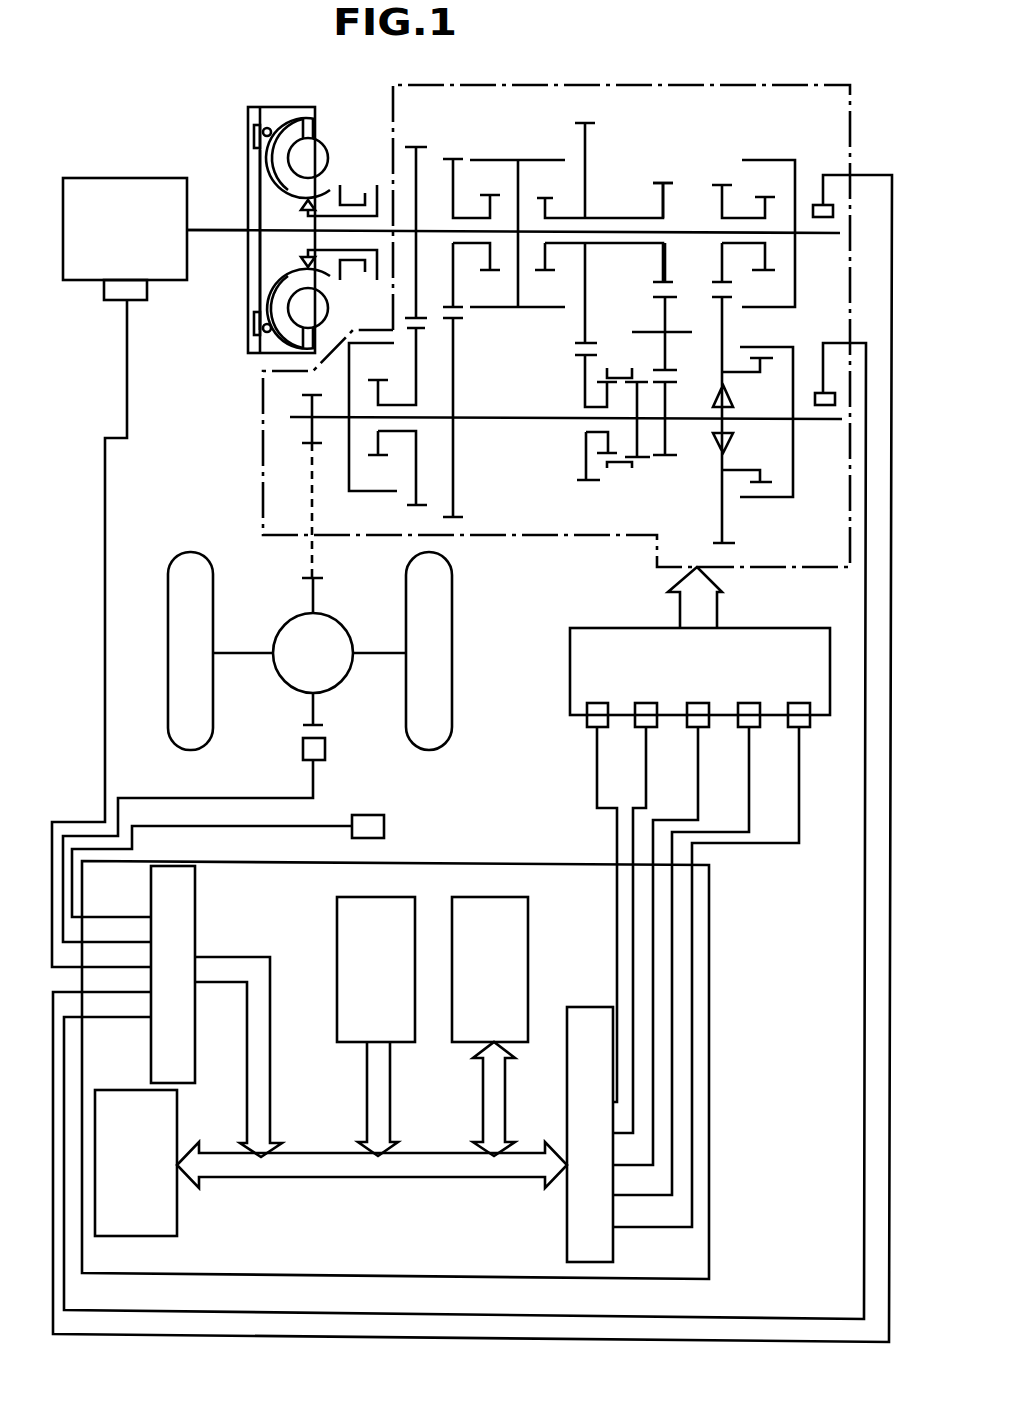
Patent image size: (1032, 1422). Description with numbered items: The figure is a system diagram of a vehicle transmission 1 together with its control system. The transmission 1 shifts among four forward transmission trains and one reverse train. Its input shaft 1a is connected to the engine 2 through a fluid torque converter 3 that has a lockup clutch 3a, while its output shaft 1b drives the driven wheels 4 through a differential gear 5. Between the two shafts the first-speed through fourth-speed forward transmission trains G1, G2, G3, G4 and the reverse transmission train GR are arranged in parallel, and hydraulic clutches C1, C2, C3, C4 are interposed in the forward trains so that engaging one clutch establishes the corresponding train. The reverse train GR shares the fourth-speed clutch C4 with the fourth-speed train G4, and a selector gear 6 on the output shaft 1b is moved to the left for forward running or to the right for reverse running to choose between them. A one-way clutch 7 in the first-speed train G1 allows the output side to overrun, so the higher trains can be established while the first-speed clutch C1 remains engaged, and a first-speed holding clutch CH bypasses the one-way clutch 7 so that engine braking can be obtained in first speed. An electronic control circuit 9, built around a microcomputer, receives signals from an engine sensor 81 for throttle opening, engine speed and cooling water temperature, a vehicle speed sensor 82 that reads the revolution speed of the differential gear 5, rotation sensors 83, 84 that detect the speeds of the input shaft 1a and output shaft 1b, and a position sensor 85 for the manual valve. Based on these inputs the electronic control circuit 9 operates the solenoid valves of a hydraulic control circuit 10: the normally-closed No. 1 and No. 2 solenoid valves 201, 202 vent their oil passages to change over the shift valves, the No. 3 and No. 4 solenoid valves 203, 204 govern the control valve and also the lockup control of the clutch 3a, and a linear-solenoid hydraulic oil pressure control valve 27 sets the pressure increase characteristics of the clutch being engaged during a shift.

The transmission 1 is at (683, 85).
The input shaft 1a is at (683, 233).
The output shaft 1b is at (512, 422).
The engine 2 is at (128, 178).
The fluid torque converter 3 is at (354, 118).
The clutch 3a is at (260, 177).
The driven wheels 4 is at (184, 666).
The differential gear 5 is at (345, 625).
The selector gear 6 is at (611, 363).
The one-way clutch 7 is at (715, 438).
The electronic control circuit 9 is at (709, 1150).
The hydraulic control circuit 10 is at (812, 628).
The No. 1 solenoid valve 201 is at (588, 727).
The No. 2 solenoid valve 202 is at (643, 727).
The No. 3 solenoid valve 203 is at (705, 730).
The No. 4 solenoid valve 204 is at (753, 732).
The hydraulic oil pressure control valve 27 is at (807, 732).
The engine sensor 81 is at (107, 303).
The vehicle speed sensor 82 is at (325, 748).
The rotation sensor 83 is at (822, 218).
The rotation sensor 84 is at (822, 410).
The position sensor 85 is at (384, 828).
The first-speed hydraulic clutch C1 is at (767, 158).
The second-speed hydraulic clutch C2 is at (487, 155).
The third-speed hydraulic clutch C3 is at (350, 491).
The fourth-speed hydraulic clutch C4 is at (548, 157).
The first-speed transmission train G1 is at (729, 176).
The second-speed transmission train G2 is at (470, 345).
The third-speed transmission train G3 is at (433, 100).
The fourth-speed transmission train G4 is at (567, 353).
The reverse transmission train GR is at (640, 170).
The first-speed holding clutch CH is at (768, 500).